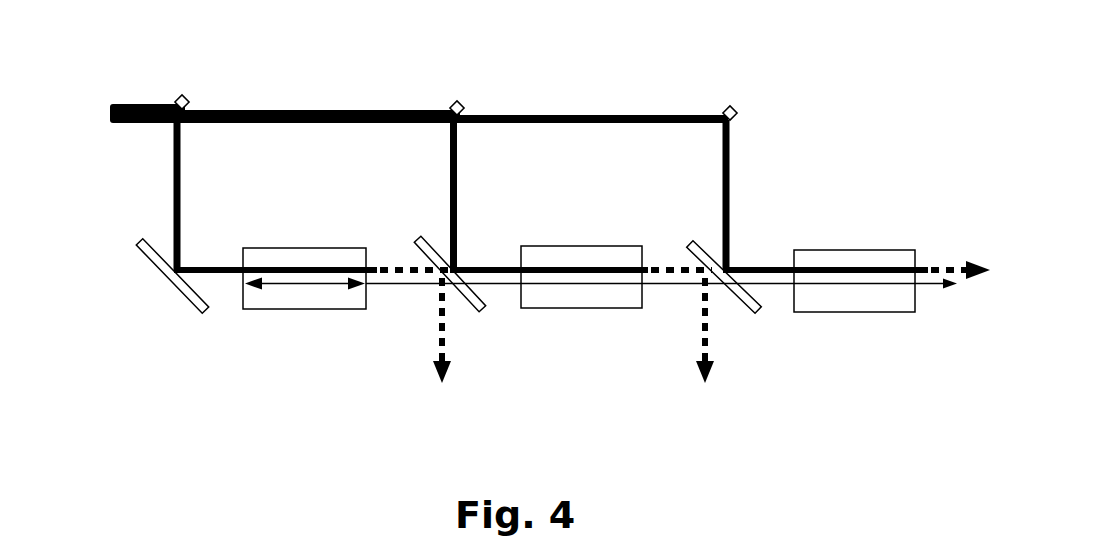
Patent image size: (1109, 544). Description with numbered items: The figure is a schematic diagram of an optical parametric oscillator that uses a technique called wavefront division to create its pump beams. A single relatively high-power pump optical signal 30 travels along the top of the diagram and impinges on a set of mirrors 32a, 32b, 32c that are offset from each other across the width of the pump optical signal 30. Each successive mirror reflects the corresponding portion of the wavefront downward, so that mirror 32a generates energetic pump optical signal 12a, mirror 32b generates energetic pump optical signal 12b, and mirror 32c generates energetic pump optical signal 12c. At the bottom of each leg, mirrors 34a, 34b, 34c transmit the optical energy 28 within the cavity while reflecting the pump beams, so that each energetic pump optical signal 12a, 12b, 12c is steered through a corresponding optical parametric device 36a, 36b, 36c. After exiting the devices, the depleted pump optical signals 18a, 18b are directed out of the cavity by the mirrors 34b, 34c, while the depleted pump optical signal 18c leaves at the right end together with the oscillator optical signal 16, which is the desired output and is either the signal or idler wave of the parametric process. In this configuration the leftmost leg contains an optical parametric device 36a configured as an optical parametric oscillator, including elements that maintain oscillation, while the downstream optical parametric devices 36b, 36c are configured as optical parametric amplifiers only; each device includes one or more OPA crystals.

The energetic pump optical signal 12a is at (173, 196).
The energetic pump optical signal 12b is at (450, 176).
The energetic pump optical signal 12c is at (722, 178).
The oscillator optical signal 16 is at (928, 287).
The depleted pump optical signal 18a is at (442, 379).
The depleted pump optical signal 18b is at (705, 383).
The depleted pump optical signal 18c is at (973, 260).
The optical energy 28 is at (270, 287).
The pump optical signal 30 is at (150, 104).
The mirror 32a is at (190, 95).
The mirror 32b is at (465, 100).
The mirror 32c is at (737, 110).
The mirror 34a is at (186, 293).
The mirror 34b is at (482, 312).
The mirror 34c is at (755, 314).
The optical parametric device 36a is at (305, 248).
The optical parametric device 36b is at (583, 246).
The optical parametric device 36c is at (857, 250).